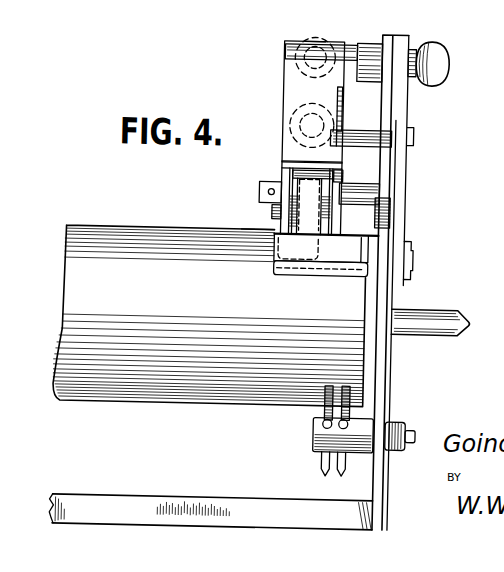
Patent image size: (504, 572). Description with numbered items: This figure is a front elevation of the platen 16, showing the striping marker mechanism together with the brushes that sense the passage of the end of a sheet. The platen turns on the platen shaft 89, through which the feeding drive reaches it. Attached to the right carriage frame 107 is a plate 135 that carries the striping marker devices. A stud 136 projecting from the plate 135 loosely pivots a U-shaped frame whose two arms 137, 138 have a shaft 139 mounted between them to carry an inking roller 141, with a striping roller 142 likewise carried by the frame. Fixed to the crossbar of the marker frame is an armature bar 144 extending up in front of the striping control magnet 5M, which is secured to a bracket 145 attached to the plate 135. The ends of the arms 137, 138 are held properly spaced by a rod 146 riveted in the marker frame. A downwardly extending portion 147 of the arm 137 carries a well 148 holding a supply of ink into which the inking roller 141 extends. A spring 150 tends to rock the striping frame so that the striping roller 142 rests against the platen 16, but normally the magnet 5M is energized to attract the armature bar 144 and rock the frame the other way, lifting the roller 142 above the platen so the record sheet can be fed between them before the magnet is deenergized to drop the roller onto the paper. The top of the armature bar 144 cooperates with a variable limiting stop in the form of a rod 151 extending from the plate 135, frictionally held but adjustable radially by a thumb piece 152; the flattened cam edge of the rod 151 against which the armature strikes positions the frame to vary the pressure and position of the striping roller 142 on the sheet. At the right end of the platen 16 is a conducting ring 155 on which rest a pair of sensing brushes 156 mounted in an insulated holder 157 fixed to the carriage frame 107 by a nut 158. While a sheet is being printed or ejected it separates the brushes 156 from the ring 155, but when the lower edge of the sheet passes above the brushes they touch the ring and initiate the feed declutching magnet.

The platen 16 is at (138, 378).
The platen shaft 89 is at (444, 310).
The right carriage frame 107 is at (384, 497).
The plate 135 is at (397, 178).
The stud 136 is at (364, 194).
The arm 137 is at (284, 171).
The arm 138 is at (337, 177).
The shaft 139 is at (272, 214).
The inking roller 141 is at (257, 187).
The striping roller 142 is at (273, 263).
The armature bar 144 is at (286, 100).
The bracket 145 is at (380, 104).
The rod 146 is at (285, 162).
The downwardly extending portion 147 is at (262, 231).
The well 148 is at (274, 274).
The spring 150 is at (336, 110).
The rod 151 is at (309, 61).
The thumb piece 152 is at (442, 62).
The conducting ring 155 is at (345, 300).
The sensing brushes 156 is at (330, 391).
The insulated holder 157 is at (362, 456).
The nut 158 is at (400, 422).
The striping control magnet 5M is at (310, 44).